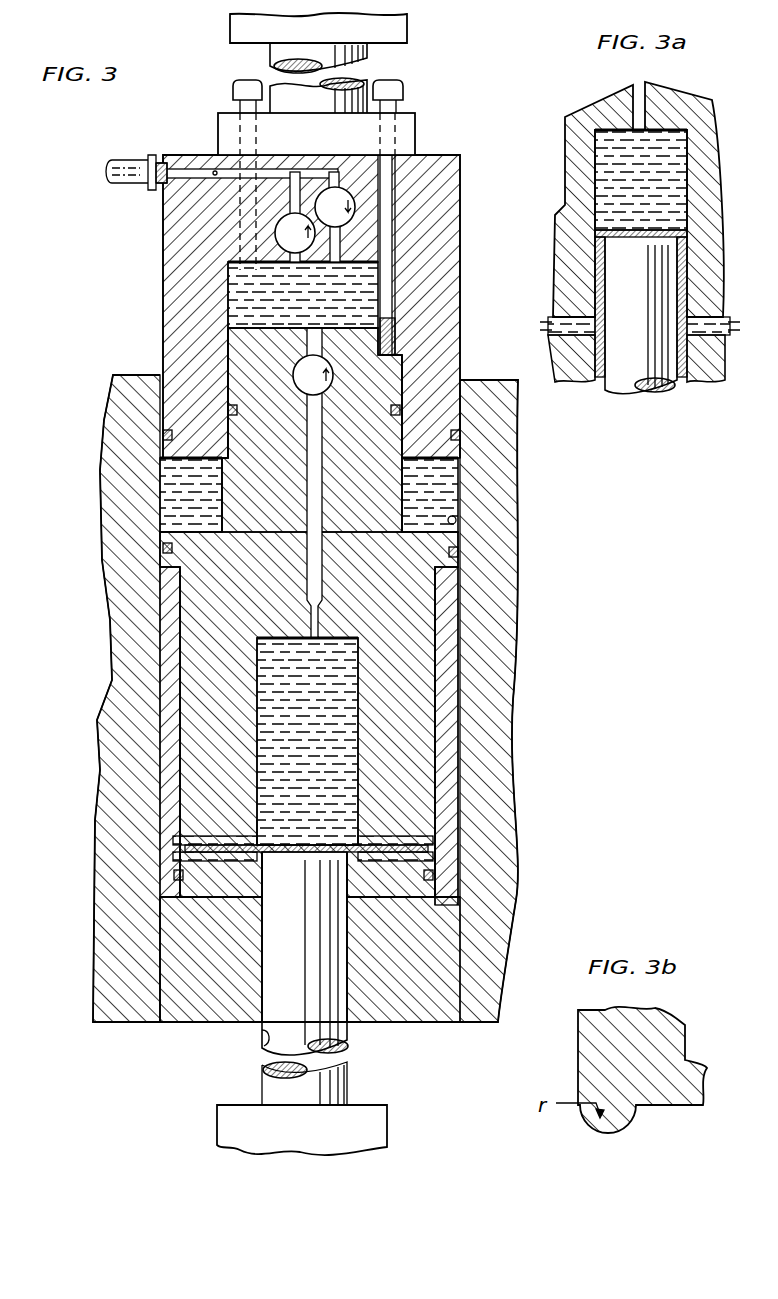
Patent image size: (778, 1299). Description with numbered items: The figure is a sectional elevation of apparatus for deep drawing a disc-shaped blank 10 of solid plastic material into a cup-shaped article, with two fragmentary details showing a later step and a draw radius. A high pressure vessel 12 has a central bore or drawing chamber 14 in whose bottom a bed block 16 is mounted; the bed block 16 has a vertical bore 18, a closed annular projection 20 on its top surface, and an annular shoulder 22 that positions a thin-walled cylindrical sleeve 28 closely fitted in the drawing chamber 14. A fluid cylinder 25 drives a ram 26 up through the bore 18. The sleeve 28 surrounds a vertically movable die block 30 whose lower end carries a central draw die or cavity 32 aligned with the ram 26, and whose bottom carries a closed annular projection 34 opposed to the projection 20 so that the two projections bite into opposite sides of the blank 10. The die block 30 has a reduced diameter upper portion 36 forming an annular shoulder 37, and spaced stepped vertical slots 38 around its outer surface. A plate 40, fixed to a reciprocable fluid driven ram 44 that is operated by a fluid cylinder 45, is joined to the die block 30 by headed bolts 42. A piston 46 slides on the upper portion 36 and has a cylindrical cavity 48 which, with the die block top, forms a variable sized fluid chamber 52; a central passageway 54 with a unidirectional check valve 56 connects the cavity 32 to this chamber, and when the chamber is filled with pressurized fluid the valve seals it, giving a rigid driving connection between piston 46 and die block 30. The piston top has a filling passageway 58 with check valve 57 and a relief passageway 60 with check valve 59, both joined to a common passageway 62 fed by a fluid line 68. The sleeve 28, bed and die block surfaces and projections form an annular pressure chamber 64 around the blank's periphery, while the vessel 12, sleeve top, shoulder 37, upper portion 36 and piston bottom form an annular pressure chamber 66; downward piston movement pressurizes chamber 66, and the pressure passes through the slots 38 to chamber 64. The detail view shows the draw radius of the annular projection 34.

In FIG. 3, the disc-shaped blank 10 is at (310, 845).
In FIG. 3a, the disc-shaped blank 10 is at (732, 328).
In FIG. 3, the high pressure vessel 12 is at (495, 725).
In FIG. 3, the drawing chamber 14 is at (456, 520).
In FIG. 3, the bed block 16 is at (408, 1020).
In FIG. 3, the bore 18 is at (264, 1036).
In FIG. 3, the annular projection 20 is at (268, 876).
In FIG. 3, the annular shoulder 22 is at (440, 900).
In FIG. 3, the fluid cylinder 25 is at (387, 1126).
In FIG. 3, the ram 26 is at (347, 1042).
In FIG. 3a, the ram 26 is at (625, 378).
In FIG. 3, the cylindrical sleeve 28 is at (448, 643).
In FIG. 3, the die block 30 is at (418, 613).
In FIG. 3a, the die block 30 is at (667, 88).
In FIG. 3, the draw die cavity 32 is at (350, 760).
In FIG. 3a, the draw die cavity 32 is at (686, 180).
In FIG. 3, the annular projection 34 is at (255, 840).
In FIG. 3, the reduced diameter upper portion 36 is at (388, 380).
In FIG. 3, the annular shoulder 37 is at (180, 515).
In FIG. 3, the stepped vertical slots 38 is at (430, 790).
In FIG. 3, the plate 40 is at (415, 120).
In FIG. 3, the headed bolts 42 is at (233, 106).
In FIG. 3, the fluid driven ram 44 is at (367, 56).
In FIG. 3, the fluid cylinder 45 is at (407, 34).
In FIG. 3, the piston 46 is at (455, 270).
In FIG. 3, the cylindrical cavity 48 is at (395, 300).
In FIG. 3, the variable sized fluid chamber 52 is at (262, 297).
In FIG. 3, the passageway 54 is at (318, 586).
In FIG. 3, the unidirectional check valve 56 is at (300, 388).
In FIG. 3, the check valve 57 is at (350, 165).
In FIG. 3, the passageway 58 is at (338, 230).
In FIG. 3, the check valve 59 is at (272, 215).
In FIG. 3, the passageway 60 is at (295, 256).
In FIG. 3, the common passageway 62 is at (215, 170).
In FIG. 3, the annular pressure chamber 64 is at (440, 850).
In FIG. 3, the annular pressure chamber 66 is at (455, 490).
In FIG. 3, the fluid line 68 is at (118, 185).